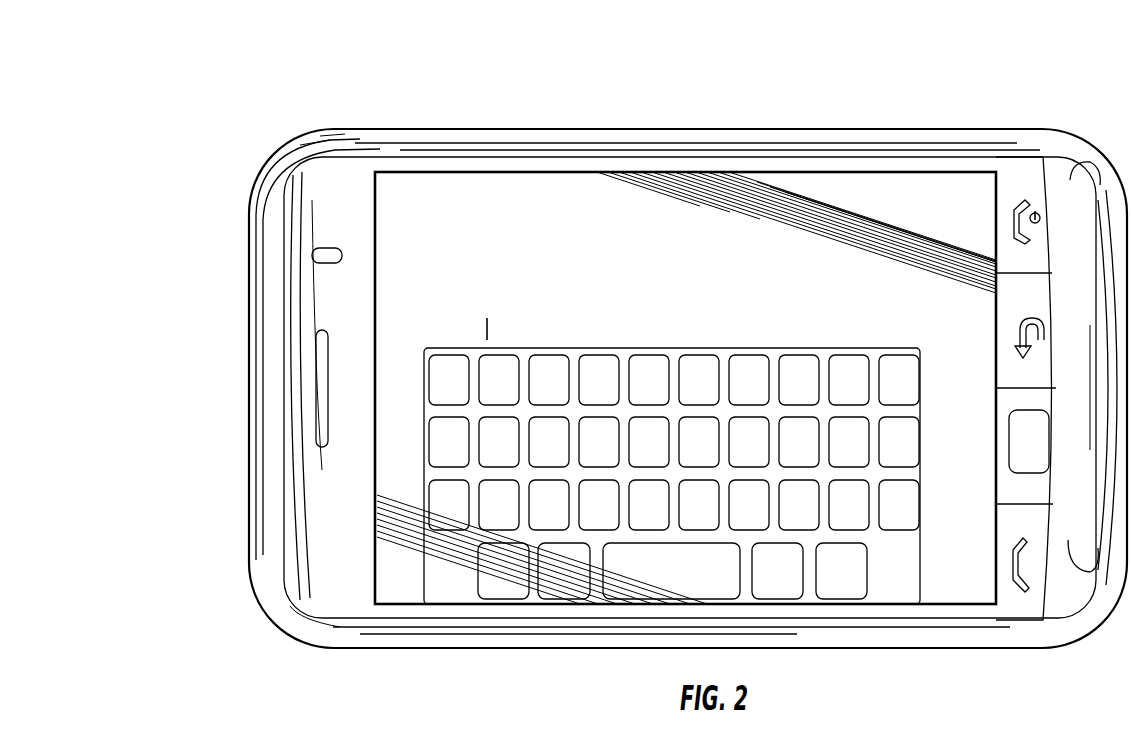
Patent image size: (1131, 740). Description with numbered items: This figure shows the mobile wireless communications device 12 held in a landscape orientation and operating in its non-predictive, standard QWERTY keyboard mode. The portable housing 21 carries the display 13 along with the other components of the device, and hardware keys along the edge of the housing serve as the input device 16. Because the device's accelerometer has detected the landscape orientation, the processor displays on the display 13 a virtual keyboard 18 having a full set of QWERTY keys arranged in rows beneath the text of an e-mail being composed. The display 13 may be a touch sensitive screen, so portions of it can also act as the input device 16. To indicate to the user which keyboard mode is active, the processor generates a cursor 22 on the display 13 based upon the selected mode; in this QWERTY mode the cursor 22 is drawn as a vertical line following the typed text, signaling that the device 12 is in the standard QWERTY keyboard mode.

The mobile wireless communications device 12 is at (438, 76).
The display 13 is at (830, 185).
The input device 16 is at (1003, 522).
The keyboard 18 is at (430, 385).
The portable housing 21 is at (262, 188).
The cursor 22 is at (489, 318).